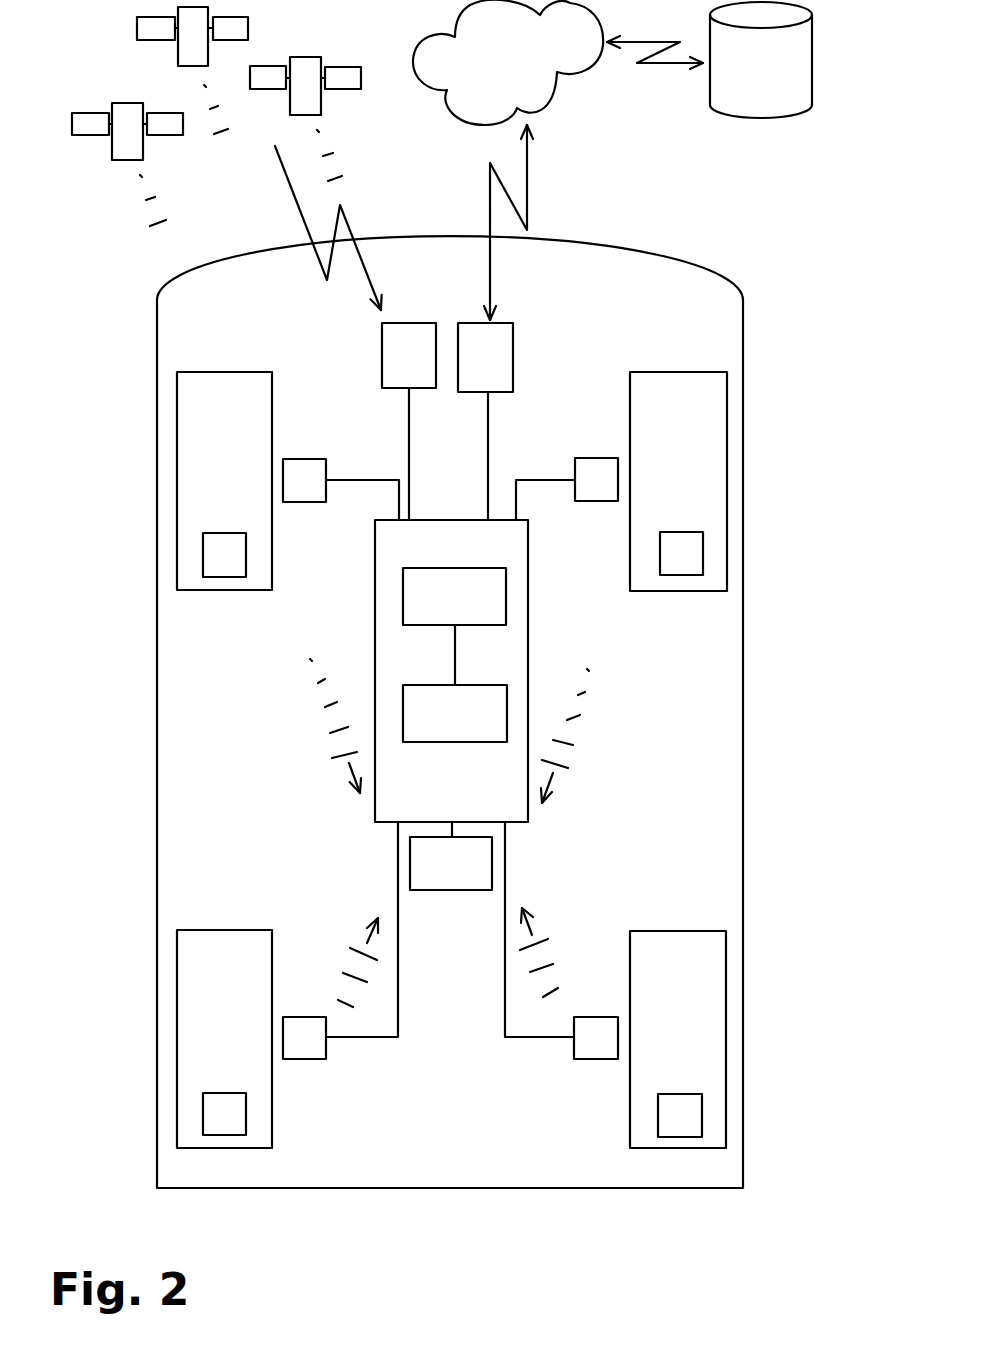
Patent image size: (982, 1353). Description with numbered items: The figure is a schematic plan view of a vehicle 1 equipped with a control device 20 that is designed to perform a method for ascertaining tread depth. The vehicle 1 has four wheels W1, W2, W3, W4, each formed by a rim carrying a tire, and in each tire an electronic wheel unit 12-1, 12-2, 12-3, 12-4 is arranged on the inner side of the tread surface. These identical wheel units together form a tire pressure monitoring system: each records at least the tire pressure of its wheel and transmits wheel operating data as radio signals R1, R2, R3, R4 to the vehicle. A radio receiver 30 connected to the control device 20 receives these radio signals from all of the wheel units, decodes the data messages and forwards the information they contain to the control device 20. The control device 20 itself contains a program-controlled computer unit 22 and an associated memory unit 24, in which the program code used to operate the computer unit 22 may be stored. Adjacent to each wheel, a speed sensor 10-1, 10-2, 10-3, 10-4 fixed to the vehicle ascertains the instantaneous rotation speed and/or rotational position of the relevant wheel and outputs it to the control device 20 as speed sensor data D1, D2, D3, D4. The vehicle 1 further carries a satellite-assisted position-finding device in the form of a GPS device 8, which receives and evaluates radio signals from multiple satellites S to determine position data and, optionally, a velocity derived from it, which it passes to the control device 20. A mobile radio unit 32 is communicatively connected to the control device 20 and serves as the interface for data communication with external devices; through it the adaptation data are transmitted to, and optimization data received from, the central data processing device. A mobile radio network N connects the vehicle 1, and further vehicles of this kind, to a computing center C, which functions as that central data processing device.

The satellites S is at (118, 58).
The vehicle 1 is at (115, 295).
The mobile radio network N is at (515, 70).
The computing center C is at (770, 70).
The GPS device 8 is at (400, 371).
The mobile radio unit 32 is at (470, 371).
The control device 20 is at (520, 610).
The memory unit 24 is at (438, 611).
The computer unit 22 is at (438, 728).
The radio receiver 30 is at (434, 874).
The speed sensor 10-1 is at (305, 473).
The speed sensor 10-2 is at (597, 470).
The speed sensor 10-3 is at (305, 1047).
The speed sensor 10-4 is at (595, 1047).
The electronic wheel unit 12-1 is at (213, 548).
The electronic wheel unit 12-2 is at (695, 545).
The electronic wheel unit 12-3 is at (213, 1110).
The electronic wheel unit 12-4 is at (690, 1112).
The vehicle wheel W1 is at (197, 450).
The vehicle wheel W2 is at (703, 455).
The vehicle wheel W3 is at (203, 1002).
The vehicle wheel W4 is at (708, 1000).
The speed sensor data D1 is at (362, 487).
The speed sensor data D2 is at (545, 487).
The speed sensor data D3 is at (383, 929).
The speed sensor data D4 is at (539, 929).
The radio signal R1 is at (333, 729).
The radio signal R2 is at (567, 739).
The radio signal R3 is at (349, 958).
The radio signal R4 is at (546, 949).